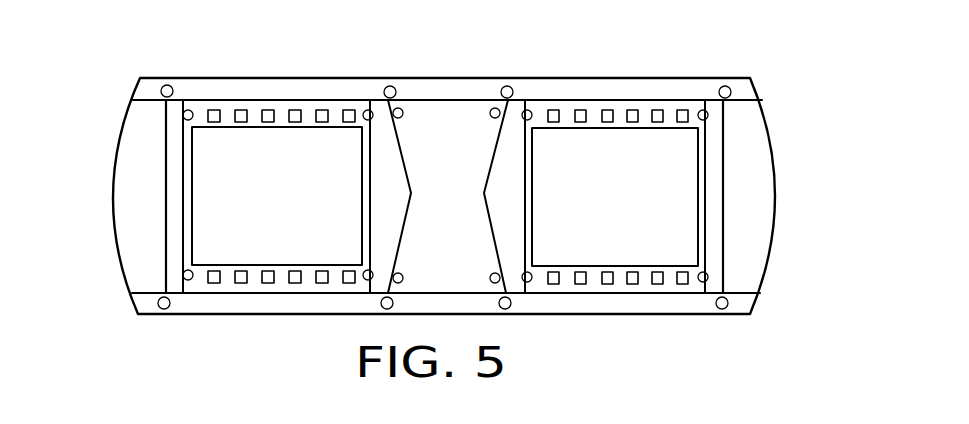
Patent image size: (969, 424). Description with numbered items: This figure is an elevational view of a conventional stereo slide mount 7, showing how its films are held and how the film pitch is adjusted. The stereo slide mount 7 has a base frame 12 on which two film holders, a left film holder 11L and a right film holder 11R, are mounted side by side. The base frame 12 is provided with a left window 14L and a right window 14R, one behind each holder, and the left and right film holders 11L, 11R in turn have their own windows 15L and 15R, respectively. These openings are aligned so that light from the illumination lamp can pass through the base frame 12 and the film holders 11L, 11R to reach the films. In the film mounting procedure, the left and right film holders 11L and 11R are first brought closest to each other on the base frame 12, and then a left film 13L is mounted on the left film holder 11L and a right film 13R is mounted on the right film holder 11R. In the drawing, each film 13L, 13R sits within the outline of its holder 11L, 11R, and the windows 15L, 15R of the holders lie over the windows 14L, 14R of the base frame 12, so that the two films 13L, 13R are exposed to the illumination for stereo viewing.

The stereo slide mount 7 is at (442, 76).
The base frame 12 is at (748, 120).
The left film holder 11L is at (166, 140).
The right film holder 11R is at (724, 133).
The left film 13L is at (183, 197).
The right film 13R is at (705, 205).
The window of left film holder 15L is at (227, 122).
The window of right film holder 15R is at (575, 124).
The left window of base frame 14L is at (281, 116).
The right window of base frame 14R is at (618, 116).